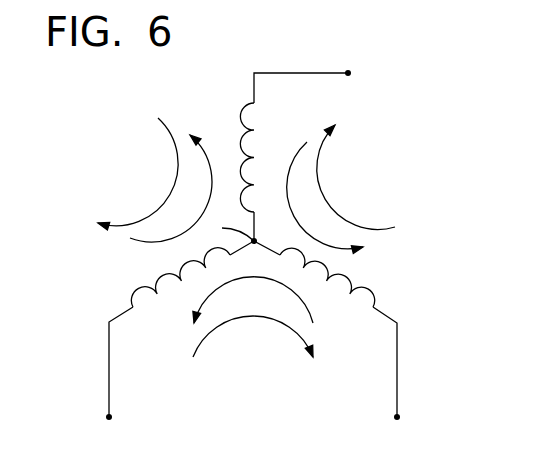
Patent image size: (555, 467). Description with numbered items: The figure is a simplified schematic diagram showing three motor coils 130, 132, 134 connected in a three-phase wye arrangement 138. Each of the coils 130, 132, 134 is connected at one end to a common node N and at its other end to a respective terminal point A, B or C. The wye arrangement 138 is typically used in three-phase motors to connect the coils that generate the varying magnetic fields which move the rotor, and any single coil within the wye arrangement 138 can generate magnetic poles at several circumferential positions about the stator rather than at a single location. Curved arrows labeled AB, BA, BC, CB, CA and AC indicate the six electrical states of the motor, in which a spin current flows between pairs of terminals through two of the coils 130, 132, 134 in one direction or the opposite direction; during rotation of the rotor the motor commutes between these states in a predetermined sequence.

The motor coil 130 is at (240, 108).
The motor coil 132 is at (140, 293).
The motor coil 134 is at (370, 292).
The three-phase wye arrangement 138 is at (420, 92).